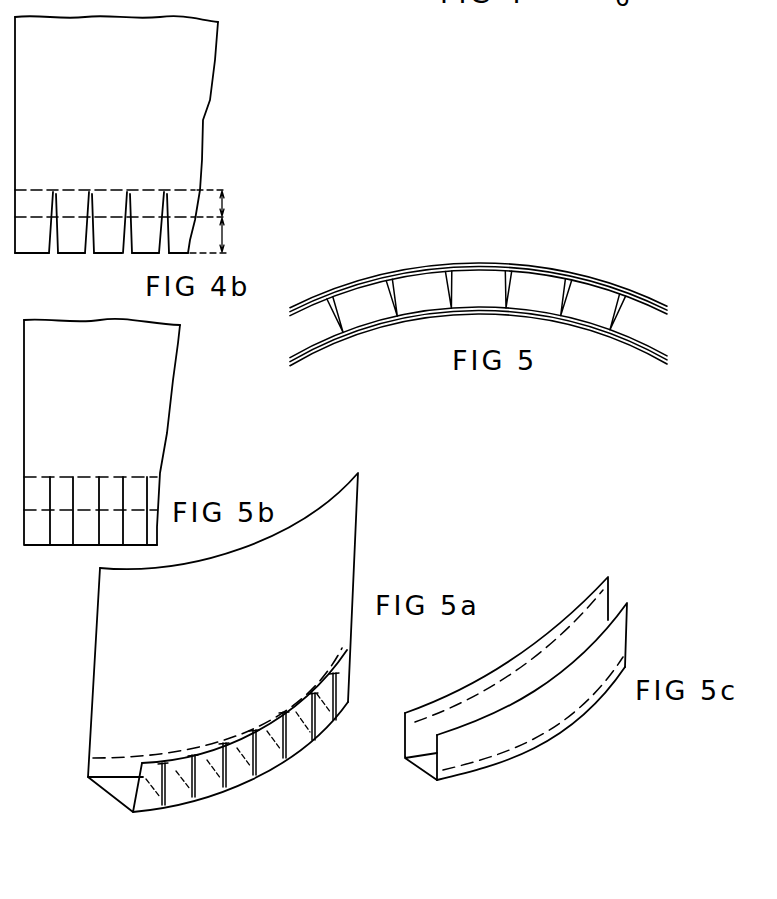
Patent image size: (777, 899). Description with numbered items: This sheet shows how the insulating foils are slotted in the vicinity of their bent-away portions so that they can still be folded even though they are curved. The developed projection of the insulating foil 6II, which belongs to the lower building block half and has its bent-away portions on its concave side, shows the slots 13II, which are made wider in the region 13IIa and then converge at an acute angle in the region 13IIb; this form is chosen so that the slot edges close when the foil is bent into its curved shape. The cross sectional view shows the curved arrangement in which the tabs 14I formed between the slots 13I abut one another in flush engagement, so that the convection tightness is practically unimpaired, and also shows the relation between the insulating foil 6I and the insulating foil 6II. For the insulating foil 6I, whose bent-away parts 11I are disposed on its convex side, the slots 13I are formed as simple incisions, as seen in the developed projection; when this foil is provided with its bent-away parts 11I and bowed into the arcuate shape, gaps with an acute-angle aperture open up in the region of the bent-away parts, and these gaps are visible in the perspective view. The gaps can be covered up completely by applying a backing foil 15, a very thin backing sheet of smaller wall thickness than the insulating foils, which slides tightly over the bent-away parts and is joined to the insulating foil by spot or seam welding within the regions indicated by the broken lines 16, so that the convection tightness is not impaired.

In FIG. 5, the insulating foil 6I is at (655, 332).
In FIG. 5A, the insulating foil 6I is at (352, 512).
In FIG. 5, the insulating foil 6II is at (590, 277).
In FIG. 5A, the bent-away parts 11I is at (175, 802).
In FIG. 5, the slots 13I is at (620, 303).
In FIG. 5B, the slots 13I is at (72, 530).
In FIG. 5A, the slots 13I is at (253, 775).
In FIG. 4B, the slots 13II is at (55, 256).
In FIG. 4B, the wider slot region 13IIa is at (223, 236).
In FIG. 4B, the converging slot region 13IIb is at (223, 201).
In FIG. 5, the tabs 14I is at (533, 287).
In FIG. 5C, the backing foil 15 is at (570, 698).
In FIG. 5A, the broken lines 16 is at (187, 747).
In FIG. 5C, the broken lines 16 is at (488, 685).